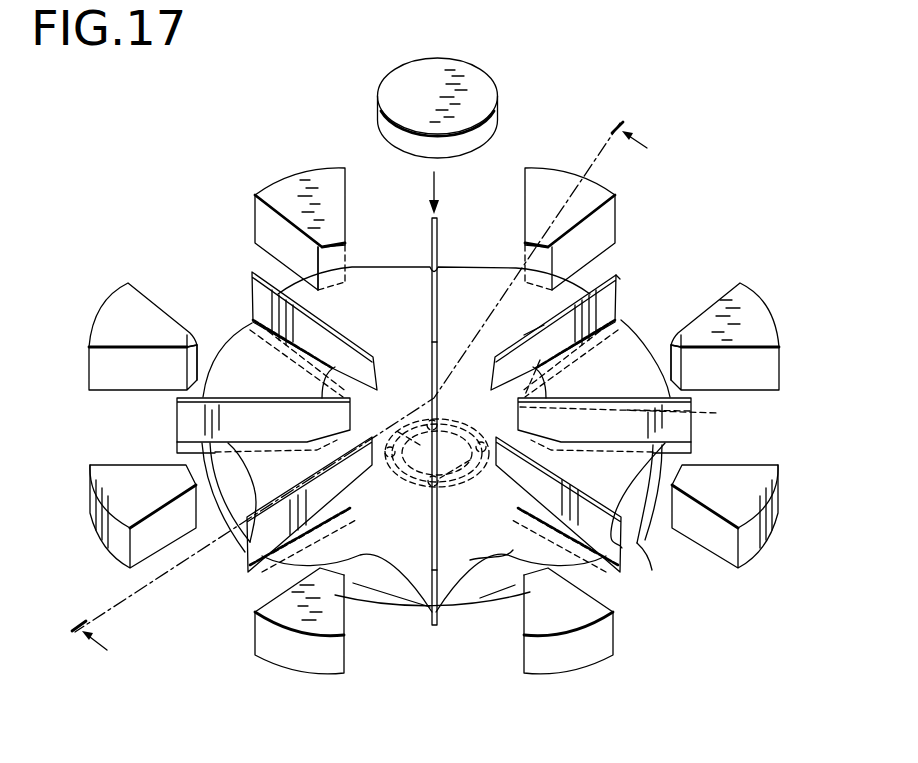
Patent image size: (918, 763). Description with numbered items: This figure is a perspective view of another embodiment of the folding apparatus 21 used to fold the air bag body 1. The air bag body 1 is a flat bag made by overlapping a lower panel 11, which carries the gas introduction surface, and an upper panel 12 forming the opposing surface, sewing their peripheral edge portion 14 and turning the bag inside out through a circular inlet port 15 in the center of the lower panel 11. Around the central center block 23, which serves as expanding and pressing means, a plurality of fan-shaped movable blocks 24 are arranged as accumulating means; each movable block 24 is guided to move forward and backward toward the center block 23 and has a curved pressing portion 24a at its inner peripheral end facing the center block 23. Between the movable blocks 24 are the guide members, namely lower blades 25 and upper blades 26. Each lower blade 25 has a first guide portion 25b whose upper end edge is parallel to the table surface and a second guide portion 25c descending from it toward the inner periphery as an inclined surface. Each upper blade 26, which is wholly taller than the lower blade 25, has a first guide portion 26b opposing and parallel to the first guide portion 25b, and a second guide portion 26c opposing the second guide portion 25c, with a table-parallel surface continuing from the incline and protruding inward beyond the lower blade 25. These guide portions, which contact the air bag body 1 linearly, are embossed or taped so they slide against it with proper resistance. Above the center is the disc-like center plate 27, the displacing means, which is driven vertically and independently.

The air bag body 1 is at (377, 606).
The lower panel 11 is at (419, 612).
The upper panel 12 is at (498, 557).
The peripheral edge portion 14 is at (638, 540).
The inlet port 15 is at (450, 477).
The folding apparatus 21 is at (175, 174).
The center block 23 is at (414, 470).
The movable block 24 is at (307, 197).
The pressing portion 24a is at (332, 265).
The lower blade 25 is at (253, 320).
The first guide portion 25b is at (540, 360).
The second guide portion 25c is at (690, 411).
The upper blade 26 is at (253, 284).
The first guide portion 26b is at (642, 282).
The second guide portion 26c is at (534, 338).
The center plate 27 is at (424, 107).